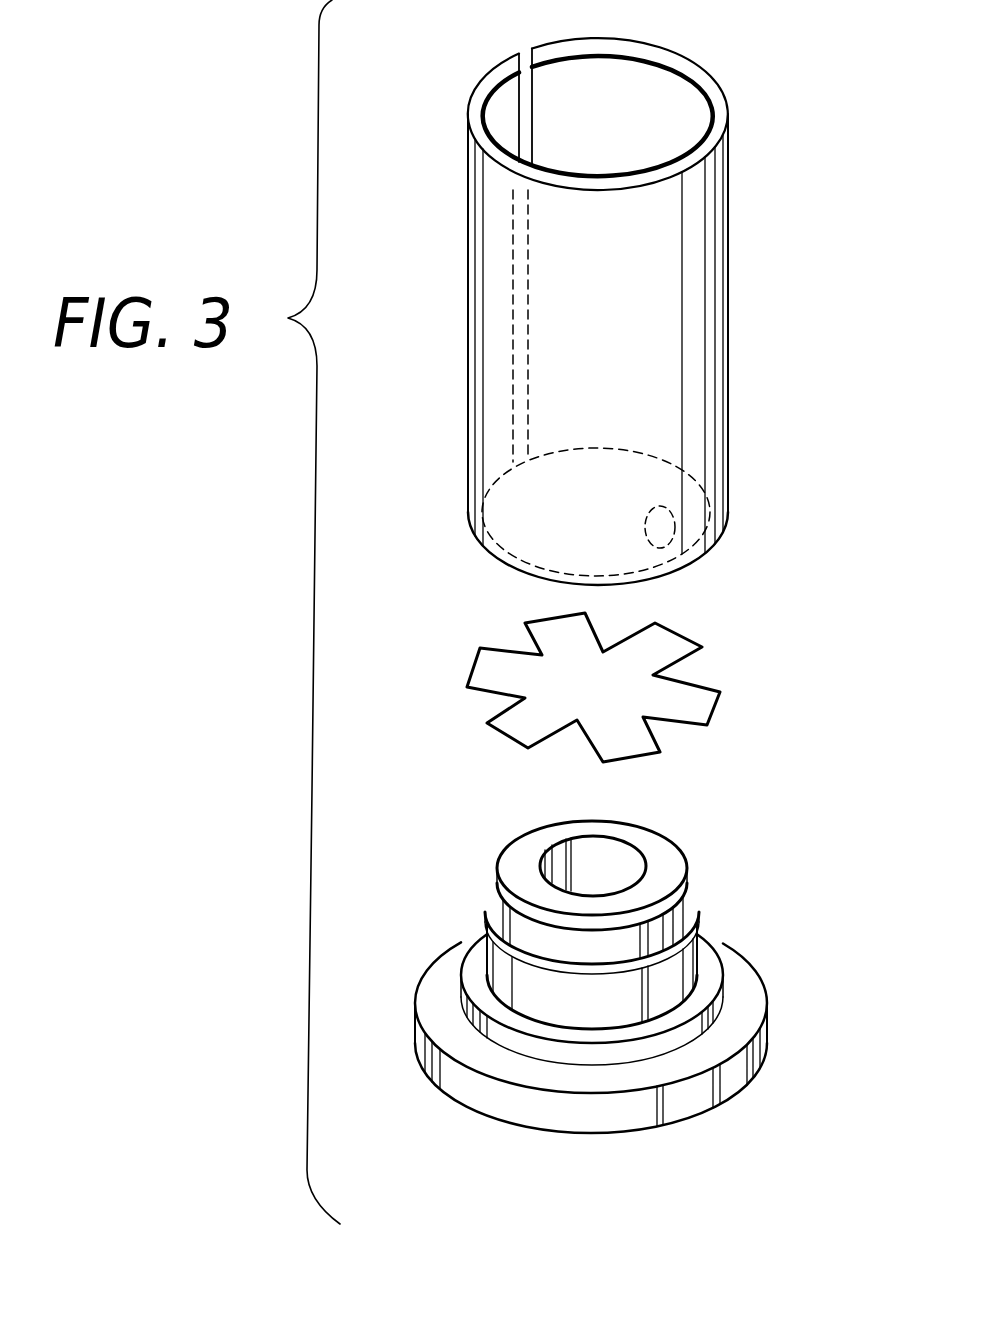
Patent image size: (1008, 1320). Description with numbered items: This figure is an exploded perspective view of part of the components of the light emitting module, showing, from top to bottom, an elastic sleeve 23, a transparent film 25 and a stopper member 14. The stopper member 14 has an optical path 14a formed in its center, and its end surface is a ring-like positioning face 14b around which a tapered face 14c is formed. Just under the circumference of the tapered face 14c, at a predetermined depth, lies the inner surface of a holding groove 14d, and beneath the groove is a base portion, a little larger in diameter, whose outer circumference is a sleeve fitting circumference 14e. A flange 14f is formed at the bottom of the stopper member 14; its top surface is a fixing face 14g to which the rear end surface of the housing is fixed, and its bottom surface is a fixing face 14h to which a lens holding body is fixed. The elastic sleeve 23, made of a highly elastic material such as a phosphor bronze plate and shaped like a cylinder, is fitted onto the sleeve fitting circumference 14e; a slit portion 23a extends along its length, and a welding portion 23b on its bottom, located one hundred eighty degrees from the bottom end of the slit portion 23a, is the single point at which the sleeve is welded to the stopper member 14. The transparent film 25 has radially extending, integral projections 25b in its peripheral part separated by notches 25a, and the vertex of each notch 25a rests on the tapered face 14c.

The elastic sleeve 23 is at (703, 323).
The slit portion 23a is at (525, 100).
The welding portion 23b is at (672, 528).
The transparent film 25 is at (736, 657).
The notches 25a is at (567, 745).
The projections 25b is at (615, 735).
The stopper member 14 is at (750, 910).
The optical path 14a is at (610, 857).
The positioning face 14b is at (525, 857).
The tapered face 14c is at (678, 880).
The holding groove 14d is at (518, 918).
The sleeve fitting circumference 14e is at (500, 965).
The flange 14f is at (748, 1075).
The fixing face 14g is at (745, 962).
The fixing face 14h is at (493, 1116).